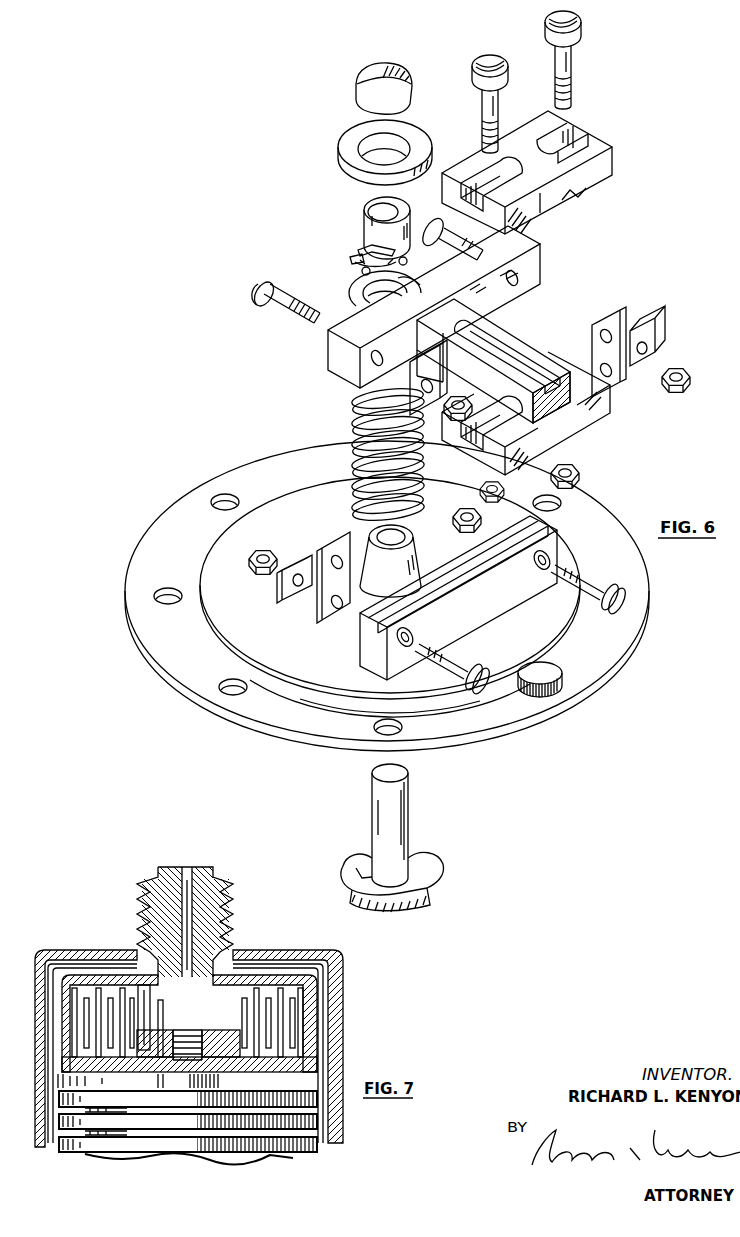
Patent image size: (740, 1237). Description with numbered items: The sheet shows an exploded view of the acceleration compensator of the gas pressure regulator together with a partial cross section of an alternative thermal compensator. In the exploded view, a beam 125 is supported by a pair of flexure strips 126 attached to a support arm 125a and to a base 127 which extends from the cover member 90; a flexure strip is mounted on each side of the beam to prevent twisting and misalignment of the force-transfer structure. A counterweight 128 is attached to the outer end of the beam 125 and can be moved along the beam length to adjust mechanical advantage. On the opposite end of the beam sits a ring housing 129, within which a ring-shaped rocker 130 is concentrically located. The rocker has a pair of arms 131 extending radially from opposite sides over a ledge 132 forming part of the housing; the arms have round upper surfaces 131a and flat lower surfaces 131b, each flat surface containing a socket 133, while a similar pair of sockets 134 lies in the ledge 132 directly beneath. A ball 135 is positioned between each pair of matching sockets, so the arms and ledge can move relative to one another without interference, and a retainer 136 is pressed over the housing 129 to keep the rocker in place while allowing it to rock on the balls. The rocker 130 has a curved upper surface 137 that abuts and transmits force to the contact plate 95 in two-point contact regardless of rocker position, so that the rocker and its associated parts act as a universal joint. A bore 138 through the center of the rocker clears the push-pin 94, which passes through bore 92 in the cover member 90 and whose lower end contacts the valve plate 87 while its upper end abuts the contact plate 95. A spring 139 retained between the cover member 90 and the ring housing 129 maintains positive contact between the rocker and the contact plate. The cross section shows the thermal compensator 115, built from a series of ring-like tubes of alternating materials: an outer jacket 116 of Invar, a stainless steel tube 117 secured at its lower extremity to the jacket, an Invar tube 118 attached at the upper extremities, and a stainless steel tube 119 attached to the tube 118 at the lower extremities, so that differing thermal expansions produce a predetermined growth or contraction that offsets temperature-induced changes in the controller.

In FIG. 6, the valve plate 87 is at (413, 886).
In FIG. 6, the cover member 90 is at (387, 596).
In FIG. 6, the bore 92 is at (405, 541).
In FIG. 6, the push-pin 94 is at (404, 806).
In FIG. 6, the contact plate 95 is at (384, 88).
In FIG. 6, the beam 125 is at (504, 333).
In FIG. 6, the support arm 125a is at (360, 383).
In FIG. 6, the flexure strips 126 is at (618, 318).
In FIG. 6, the base 127 is at (362, 633).
In FIG. 6, the counterweight 128 is at (605, 173).
In FIG. 6, the ring housing 129 is at (348, 313).
In FIG. 6, the ring-shaped rocker 130 is at (364, 224).
In FIG. 6, the arms 131 is at (446, 234).
In FIG. 6, the round upper surfaces 131a is at (363, 245).
In FIG. 6, the flat lower surfaces 131b is at (353, 255).
In FIG. 6, the ledge 132 is at (356, 287).
In FIG. 6, the socket 133 is at (357, 262).
In FIG. 6, the sockets 134 is at (410, 281).
In FIG. 6, the ball 135 is at (339, 271).
In FIG. 6, the retainer 136 is at (355, 137).
In FIG. 6, the curved upper surface 137 is at (368, 198).
In FIG. 6, the bore 138 is at (392, 204).
In FIG. 6, the spring 139 is at (350, 428).
In FIG. 7, the thermal compensator 115 is at (322, 1021).
In FIG. 7, the outer jacket 116 is at (310, 1032).
In FIG. 7, the tube 117 is at (302, 1002).
In FIG. 7, the tube 118 is at (188, 1119).
In FIG. 7, the tube 119 is at (280, 1010).